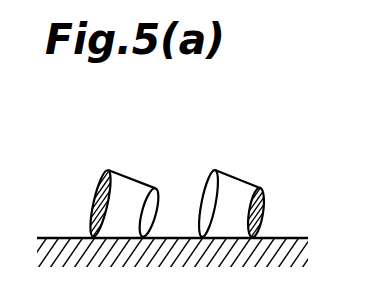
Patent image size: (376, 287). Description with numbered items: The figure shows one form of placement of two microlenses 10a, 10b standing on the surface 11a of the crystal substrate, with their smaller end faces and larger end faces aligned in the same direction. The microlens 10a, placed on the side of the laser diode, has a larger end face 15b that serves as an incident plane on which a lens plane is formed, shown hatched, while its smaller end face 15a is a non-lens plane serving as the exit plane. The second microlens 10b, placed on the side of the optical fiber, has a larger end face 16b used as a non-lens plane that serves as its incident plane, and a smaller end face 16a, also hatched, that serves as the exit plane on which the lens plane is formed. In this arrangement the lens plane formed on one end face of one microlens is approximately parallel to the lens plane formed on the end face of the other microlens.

The microlens 10a is at (108, 173).
The microlens 10b is at (262, 179).
The smaller end face 15a is at (157, 196).
The larger end face 15b is at (93, 200).
The smaller end face 16a is at (264, 214).
The larger end face 16b is at (200, 214).
The surface of the crystal substrate 11a is at (277, 237).